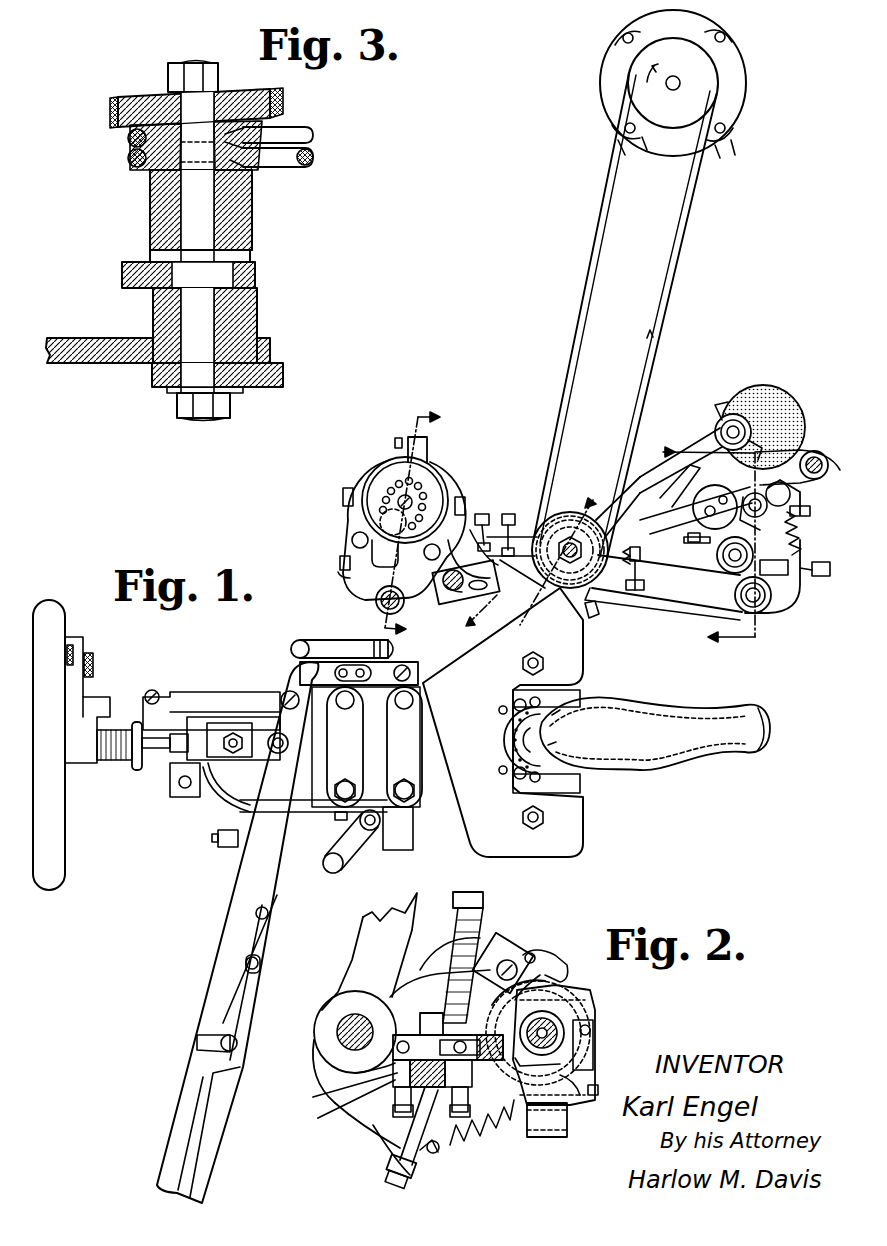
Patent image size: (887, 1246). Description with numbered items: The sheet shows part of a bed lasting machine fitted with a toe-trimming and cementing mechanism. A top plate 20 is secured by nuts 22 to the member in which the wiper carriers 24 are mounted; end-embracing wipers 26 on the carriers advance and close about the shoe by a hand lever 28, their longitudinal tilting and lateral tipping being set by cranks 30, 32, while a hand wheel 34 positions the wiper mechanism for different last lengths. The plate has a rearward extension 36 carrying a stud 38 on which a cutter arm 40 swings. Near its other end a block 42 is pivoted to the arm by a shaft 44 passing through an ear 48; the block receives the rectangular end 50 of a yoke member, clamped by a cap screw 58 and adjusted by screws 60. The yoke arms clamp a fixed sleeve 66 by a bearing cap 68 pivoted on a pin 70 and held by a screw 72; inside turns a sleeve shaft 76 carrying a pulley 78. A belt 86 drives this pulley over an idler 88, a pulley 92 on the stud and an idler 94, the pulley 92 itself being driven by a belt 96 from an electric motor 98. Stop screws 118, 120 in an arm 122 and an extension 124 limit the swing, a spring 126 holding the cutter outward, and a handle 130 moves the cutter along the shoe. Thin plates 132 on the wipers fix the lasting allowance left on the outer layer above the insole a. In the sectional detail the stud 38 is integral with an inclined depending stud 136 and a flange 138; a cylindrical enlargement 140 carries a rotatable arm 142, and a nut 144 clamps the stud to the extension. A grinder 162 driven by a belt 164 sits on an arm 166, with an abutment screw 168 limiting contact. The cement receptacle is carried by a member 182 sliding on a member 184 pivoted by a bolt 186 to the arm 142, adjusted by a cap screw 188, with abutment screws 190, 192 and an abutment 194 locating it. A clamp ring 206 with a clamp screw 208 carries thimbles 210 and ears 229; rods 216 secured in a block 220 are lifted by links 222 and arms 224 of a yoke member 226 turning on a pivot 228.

In FIG. 1, the top plate 20 is at (572, 850).
In FIG. 1, the nuts 22 is at (543, 661).
In FIG. 1, the wiper carriers 24 is at (575, 700).
In FIG. 1, the end-embracing wipers 26 is at (582, 780).
In FIG. 1, the hand lever 28 is at (210, 982).
In FIG. 1, the crank 30 is at (333, 873).
In FIG. 1, the crank 32 is at (291, 646).
In FIG. 1, the hand wheel 34 is at (57, 853).
In FIG. 3, the rearward extension 36 is at (110, 363).
In FIG. 1, the rearward extension 36 is at (586, 648).
In FIG. 3, the stud 38 is at (212, 214).
In FIG. 1, the stud 38 is at (566, 545).
In FIG. 3, the cutter arm 40 is at (252, 240).
In FIG. 1, the cutter arm 40 is at (690, 590).
In FIG. 2, the cutter arm 40 is at (384, 918).
In FIG. 2, the block 42 is at (355, 1108).
In FIG. 2, the shaft 44 is at (348, 1018).
In FIG. 2, the ear 48 is at (330, 1090).
In FIG. 2, the rectangular end of yoke member 50 is at (409, 1042).
In FIG. 2, the cap screw 58 is at (432, 1022).
In FIG. 2, the screws 60 is at (436, 1152).
In FIG. 2, the fixed sleeve 66 is at (593, 1047).
In FIG. 2, the bearing cap 68 is at (565, 995).
In FIG. 2, the pin 70 is at (575, 1025).
In FIG. 2, the screw 72 is at (500, 1010).
In FIG. 2, the sleeve shaft 76 is at (560, 1020).
In FIG. 1, the pulley 78 is at (798, 528).
In FIG. 3, the belt 86 is at (110, 110).
In FIG. 1, the belt 86 is at (688, 552).
In FIG. 1, the idler 88 is at (757, 615).
In FIG. 3, the pulley 92 is at (141, 100).
In FIG. 1, the pulley 92 is at (567, 590).
In FIG. 1, the idler 94 is at (727, 568).
In FIG. 3, the belt 96 is at (300, 130).
In FIG. 1, the belt 96 is at (672, 280).
In FIG. 1, the electric motor 98 is at (660, 148).
In FIG. 1, the stop screw 118 is at (820, 578).
In FIG. 2, the stop screw 118 is at (390, 1171).
In FIG. 1, the stop screw 120 is at (740, 530).
In FIG. 2, the stop screw 120 is at (478, 899).
In FIG. 1, the arm 122 is at (786, 608).
In FIG. 2, the arm 122 is at (372, 1120).
In FIG. 2, the extension 124 is at (423, 940).
In FIG. 2, the spring 126 is at (490, 1130).
In FIG. 1, the handle 130 is at (814, 451).
In FIG. 1, the thin plates 132 is at (525, 735).
In FIG. 3, the depending stud 136 is at (218, 322).
In FIG. 3, the flange 138 is at (250, 256).
In FIG. 3, the cylindrical enlargement 140 is at (233, 278).
In FIG. 3, the arm 142 is at (125, 285).
In FIG. 1, the arm 142 is at (522, 540).
In FIG. 3, the nut 144 is at (225, 405).
In FIG. 1, the grinder 162 is at (735, 405).
In FIG. 3, the belt 164 is at (297, 160).
In FIG. 1, the belt 164 is at (702, 432).
In FIG. 3, the arm 166 is at (282, 368).
In FIG. 1, the arm 166 is at (675, 496).
In FIG. 1, the abutment screw 168 is at (637, 592).
In FIG. 1, the member 182 is at (488, 642).
In FIG. 1, the member 184 is at (553, 560).
In FIG. 1, the bolt 186 is at (438, 600).
In FIG. 1, the cap screw 188 is at (460, 566).
In FIG. 1, the abutment screw 190 is at (483, 512).
In FIG. 1, the abutment screw 192 is at (509, 513).
In FIG. 1, the abutment 194 is at (598, 616).
In FIG. 1, the clamp ring 206 is at (408, 450).
In FIG. 1, the clamp screw 208 is at (396, 438).
In FIG. 1, the thimbles 210 is at (390, 533).
In FIG. 1, the rods 216 is at (398, 494).
In FIG. 1, the block 220 is at (385, 469).
In FIG. 1, the link 222 is at (345, 499).
In FIG. 1, the arms 224 is at (355, 521).
In FIG. 1, the yoke member 226 is at (380, 607).
In FIG. 1, the pivot 228 is at (345, 557).
In FIG. 1, the ears 229 is at (355, 581).
In FIG. 1, the insole a is at (625, 745).